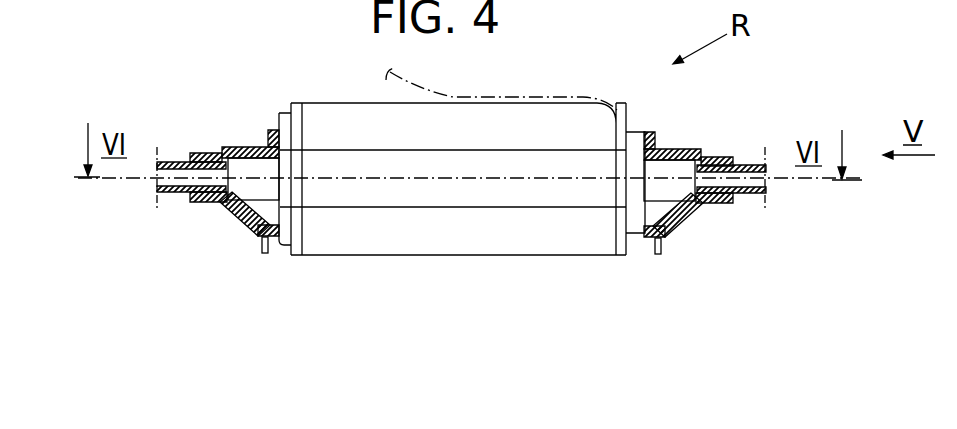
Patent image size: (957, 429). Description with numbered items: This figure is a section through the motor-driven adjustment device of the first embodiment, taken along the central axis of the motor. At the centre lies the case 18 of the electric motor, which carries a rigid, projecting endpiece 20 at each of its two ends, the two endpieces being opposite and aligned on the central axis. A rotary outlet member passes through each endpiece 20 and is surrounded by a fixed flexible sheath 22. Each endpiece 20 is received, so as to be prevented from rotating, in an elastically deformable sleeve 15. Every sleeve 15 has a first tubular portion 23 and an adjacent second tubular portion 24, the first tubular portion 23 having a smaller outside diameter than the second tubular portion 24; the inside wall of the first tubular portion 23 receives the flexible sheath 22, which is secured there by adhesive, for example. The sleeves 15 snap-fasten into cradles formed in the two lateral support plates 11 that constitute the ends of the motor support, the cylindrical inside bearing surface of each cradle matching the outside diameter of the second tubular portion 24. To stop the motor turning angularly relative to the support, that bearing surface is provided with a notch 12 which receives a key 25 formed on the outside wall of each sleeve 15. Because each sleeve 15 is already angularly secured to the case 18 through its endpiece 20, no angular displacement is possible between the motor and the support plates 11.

The lateral support plate 11 is at (265, 254).
The notch 12 is at (268, 236).
The elastically deformable sleeve 15 is at (226, 128).
The motor case 18 is at (323, 103).
The endpiece 20 is at (235, 185).
The flexible sheath 22 is at (172, 190).
The first tubular portion 23 is at (202, 154).
The second tubular portion 24 is at (247, 147).
The key 25 is at (245, 226).